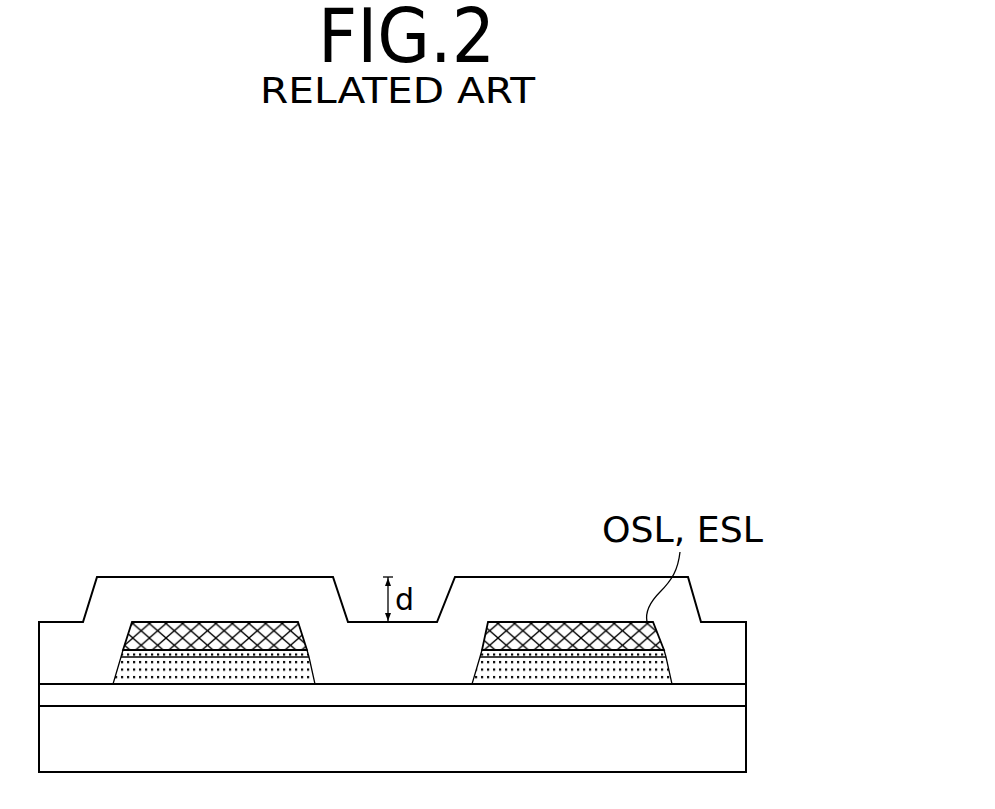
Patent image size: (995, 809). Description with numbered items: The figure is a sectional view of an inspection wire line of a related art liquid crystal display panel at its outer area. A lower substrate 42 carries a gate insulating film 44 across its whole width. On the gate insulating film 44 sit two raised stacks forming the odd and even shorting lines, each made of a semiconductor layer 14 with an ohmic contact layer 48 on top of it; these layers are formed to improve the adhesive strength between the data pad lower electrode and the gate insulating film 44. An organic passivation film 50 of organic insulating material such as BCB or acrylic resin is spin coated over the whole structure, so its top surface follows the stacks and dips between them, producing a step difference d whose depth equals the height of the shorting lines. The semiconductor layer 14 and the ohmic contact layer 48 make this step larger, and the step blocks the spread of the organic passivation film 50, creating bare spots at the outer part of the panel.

The lower substrate 42 is at (742, 758).
The gate insulating film 44 is at (742, 701).
The organic passivation film 50 is at (742, 671).
The semiconductor layer 14 is at (666, 665).
The ohmic contact layer 48 is at (661, 650).